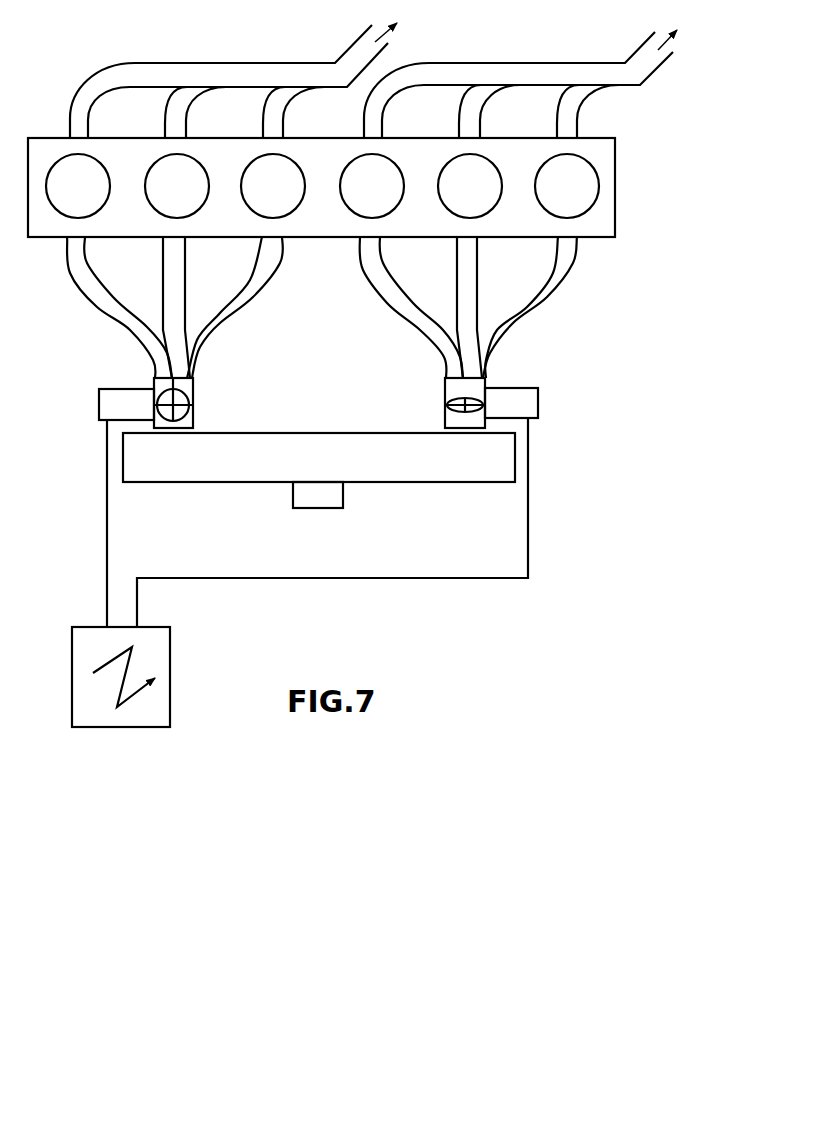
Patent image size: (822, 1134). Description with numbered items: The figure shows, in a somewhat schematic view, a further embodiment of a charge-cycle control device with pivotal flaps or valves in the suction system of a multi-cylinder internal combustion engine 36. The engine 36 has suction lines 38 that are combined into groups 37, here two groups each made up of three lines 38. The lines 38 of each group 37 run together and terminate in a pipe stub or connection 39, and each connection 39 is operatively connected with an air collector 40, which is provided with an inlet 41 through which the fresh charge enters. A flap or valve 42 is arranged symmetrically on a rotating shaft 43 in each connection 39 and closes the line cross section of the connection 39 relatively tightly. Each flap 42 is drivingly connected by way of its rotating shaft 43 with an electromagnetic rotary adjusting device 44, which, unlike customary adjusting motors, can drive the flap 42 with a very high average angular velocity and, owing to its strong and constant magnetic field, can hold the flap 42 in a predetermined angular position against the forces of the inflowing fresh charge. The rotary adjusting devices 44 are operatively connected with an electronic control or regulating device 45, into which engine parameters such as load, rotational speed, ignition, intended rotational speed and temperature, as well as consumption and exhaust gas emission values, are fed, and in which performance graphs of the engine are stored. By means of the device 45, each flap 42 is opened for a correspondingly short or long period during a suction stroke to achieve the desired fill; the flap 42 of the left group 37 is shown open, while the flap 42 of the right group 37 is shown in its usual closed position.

The multi-cylinder internal combustion engine 36 is at (603, 150).
The group of suction lines 37 is at (326, 307).
The suction line 38 is at (588, 283).
The pipe stub or connection 39 is at (193, 418).
The air collector 40 is at (205, 470).
The inlet 41 is at (330, 497).
The flap or valve 42 is at (173, 391).
The rotating shaft 43 is at (173, 405).
The electromagnetic rotary adjusting device 44 is at (125, 397).
The electronic control or regulating device 45 is at (167, 642).